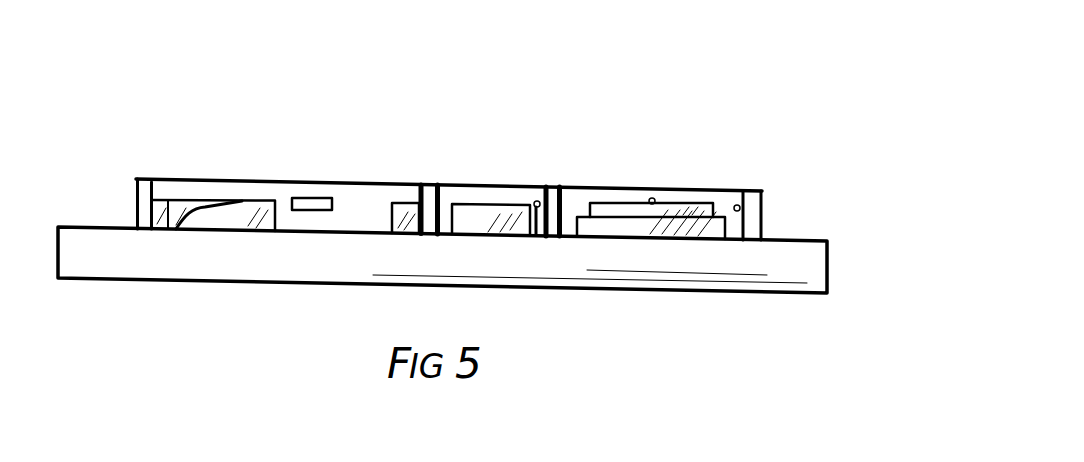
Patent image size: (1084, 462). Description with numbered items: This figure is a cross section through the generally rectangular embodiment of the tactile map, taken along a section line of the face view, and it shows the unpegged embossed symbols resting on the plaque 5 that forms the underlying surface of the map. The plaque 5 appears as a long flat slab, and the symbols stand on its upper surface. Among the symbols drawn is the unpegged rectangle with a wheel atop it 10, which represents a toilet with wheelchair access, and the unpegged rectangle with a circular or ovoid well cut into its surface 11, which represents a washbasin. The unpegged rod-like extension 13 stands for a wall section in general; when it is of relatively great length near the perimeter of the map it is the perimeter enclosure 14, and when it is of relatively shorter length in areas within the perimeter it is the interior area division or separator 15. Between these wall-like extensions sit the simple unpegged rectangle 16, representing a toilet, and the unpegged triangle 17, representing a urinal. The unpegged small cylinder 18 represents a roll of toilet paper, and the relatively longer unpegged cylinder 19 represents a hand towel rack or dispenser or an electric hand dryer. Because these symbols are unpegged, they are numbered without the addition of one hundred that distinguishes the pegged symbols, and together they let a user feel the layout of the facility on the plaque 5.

The plaque 5 is at (778, 263).
The unpegged rectangle with a wheel atop it 10 is at (650, 222).
The unpegged rectangle with a circular or ovoid well cut into its surface 11 is at (183, 215).
The unpegged rod-like extension 13 is at (432, 203).
The unpegged rod-like extension of relatively great length 14 is at (450, 190).
The unpegged rod-like extension of relatively shorter length 15 is at (490, 210).
The simple unpegged rectangle 16 is at (470, 217).
The unpegged triangle 17 is at (397, 200).
The unpegged small cylinder 18 is at (538, 205).
The relatively longer unpegged cylinder 19 is at (305, 200).